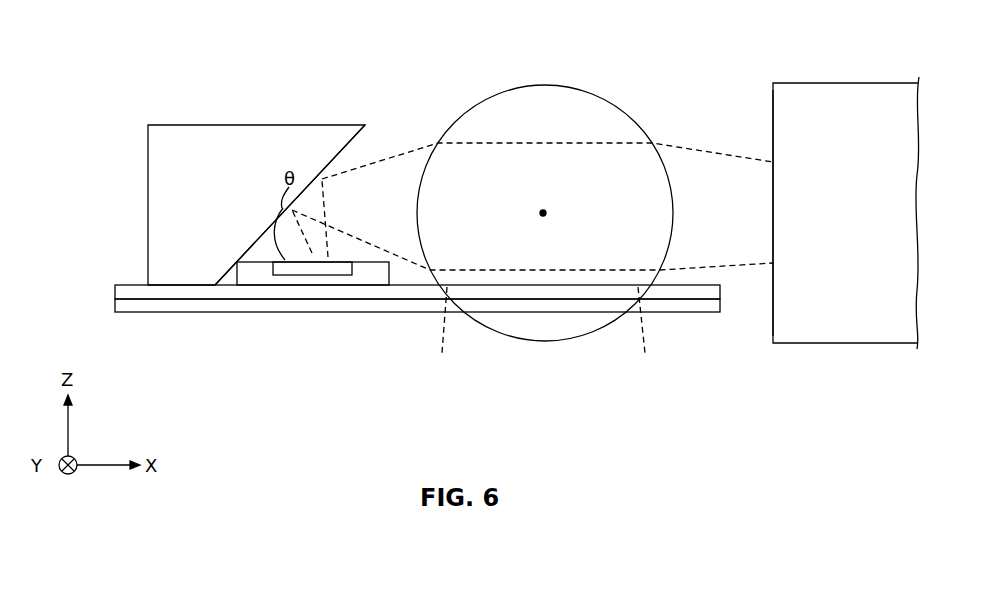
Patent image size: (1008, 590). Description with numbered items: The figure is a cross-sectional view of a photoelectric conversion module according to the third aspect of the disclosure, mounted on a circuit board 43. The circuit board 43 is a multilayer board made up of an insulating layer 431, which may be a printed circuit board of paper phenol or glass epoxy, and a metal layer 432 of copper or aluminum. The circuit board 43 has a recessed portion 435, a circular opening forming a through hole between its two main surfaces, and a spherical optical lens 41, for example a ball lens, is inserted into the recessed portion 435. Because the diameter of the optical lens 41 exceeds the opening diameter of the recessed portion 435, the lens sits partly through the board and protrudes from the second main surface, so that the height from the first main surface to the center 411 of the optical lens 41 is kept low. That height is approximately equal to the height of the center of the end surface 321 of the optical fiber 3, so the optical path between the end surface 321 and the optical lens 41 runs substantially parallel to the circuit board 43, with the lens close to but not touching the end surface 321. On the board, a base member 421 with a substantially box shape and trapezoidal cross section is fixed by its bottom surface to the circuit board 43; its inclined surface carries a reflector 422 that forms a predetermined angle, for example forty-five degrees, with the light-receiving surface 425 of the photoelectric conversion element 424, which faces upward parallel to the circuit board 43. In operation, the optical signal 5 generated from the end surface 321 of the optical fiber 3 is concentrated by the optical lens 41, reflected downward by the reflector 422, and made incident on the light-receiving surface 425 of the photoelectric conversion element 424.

The optical fiber 3 is at (853, 83).
The end surface 321 is at (773, 210).
The optical lens 41 is at (544, 85).
The center 411 is at (546, 213).
The base member 421 is at (196, 125).
The reflector 422 is at (300, 196).
The photoelectric conversion element 424 is at (390, 286).
The light-receiving surface 425 is at (343, 262).
The circuit board 43 is at (370, 300).
The insulating layer 431 is at (117, 306).
The metal layer 432 is at (117, 290).
The recessed portion 435 is at (545, 334).
The optical signal 5 is at (718, 150).